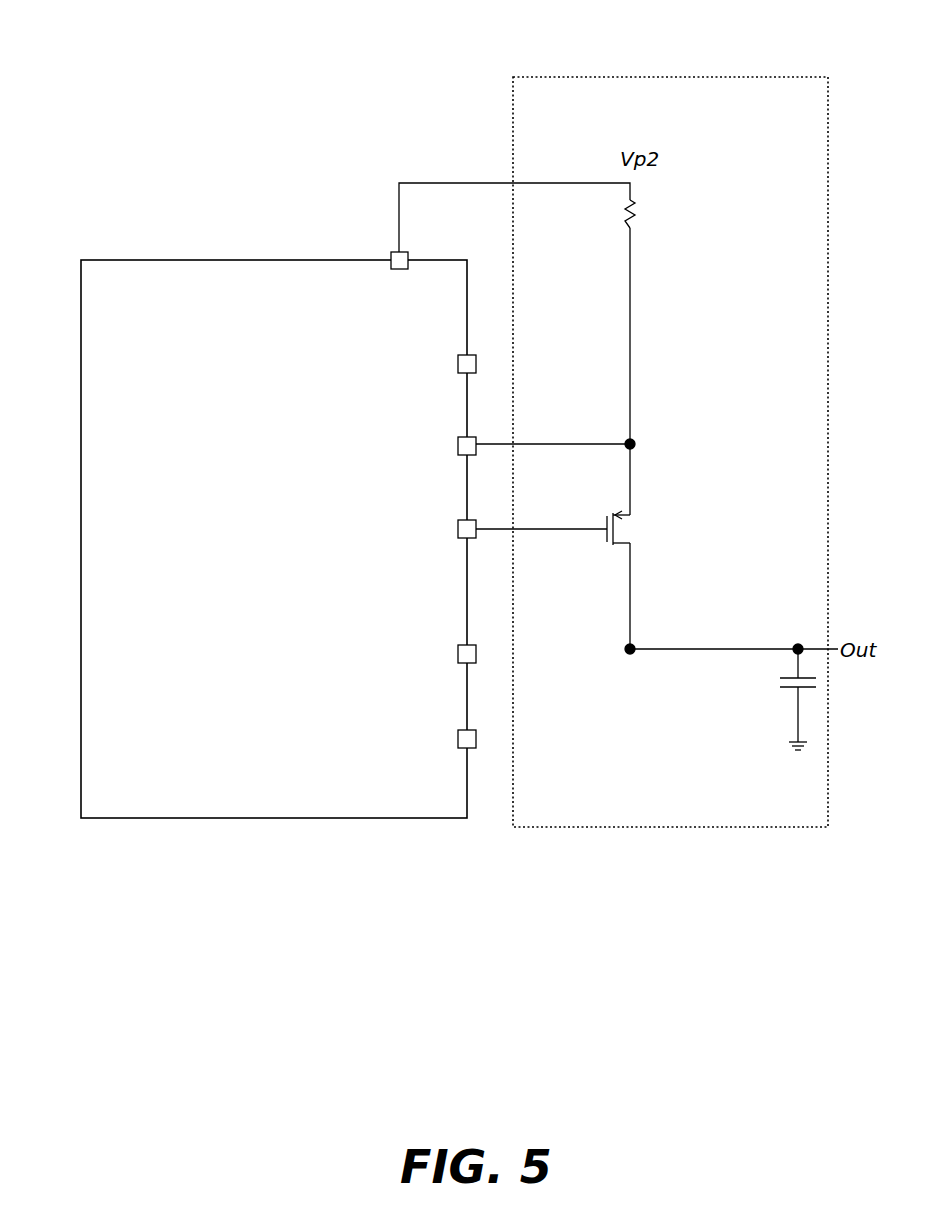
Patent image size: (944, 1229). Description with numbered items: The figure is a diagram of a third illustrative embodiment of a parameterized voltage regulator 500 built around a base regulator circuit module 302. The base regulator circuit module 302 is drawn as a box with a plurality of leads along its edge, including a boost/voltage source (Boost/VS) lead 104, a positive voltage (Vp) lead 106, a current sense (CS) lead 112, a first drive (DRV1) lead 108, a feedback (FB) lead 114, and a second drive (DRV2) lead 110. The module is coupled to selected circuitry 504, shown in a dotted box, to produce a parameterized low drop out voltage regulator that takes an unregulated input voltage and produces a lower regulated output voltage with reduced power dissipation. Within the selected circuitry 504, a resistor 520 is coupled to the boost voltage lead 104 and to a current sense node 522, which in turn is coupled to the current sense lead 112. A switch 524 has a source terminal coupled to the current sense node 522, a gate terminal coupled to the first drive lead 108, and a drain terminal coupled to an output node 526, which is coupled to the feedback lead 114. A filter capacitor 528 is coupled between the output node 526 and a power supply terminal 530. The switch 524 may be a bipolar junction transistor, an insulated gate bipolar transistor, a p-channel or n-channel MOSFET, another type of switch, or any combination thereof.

The parameterized voltage regulator 500 is at (108, 76).
The base regulator circuit module 302 is at (162, 259).
The boost/voltage source (Boost/VS) lead 104 is at (391, 253).
The positive voltage (Vp) lead 106 is at (458, 356).
The current sense (CS) lead 112 is at (458, 440).
The first drive (DRV1) lead 108 is at (458, 521).
The feedback (FB) lead 114 is at (458, 646).
The second drive (DRV2) lead 110 is at (458, 731).
The selected circuitry 504 is at (669, 77).
The resistor 520 is at (640, 225).
The current sense node 522 is at (632, 441).
The switch 524 is at (640, 522).
The output node 526 is at (632, 647).
The filter capacitor 528 is at (783, 688).
The power supply terminal 530 is at (794, 744).